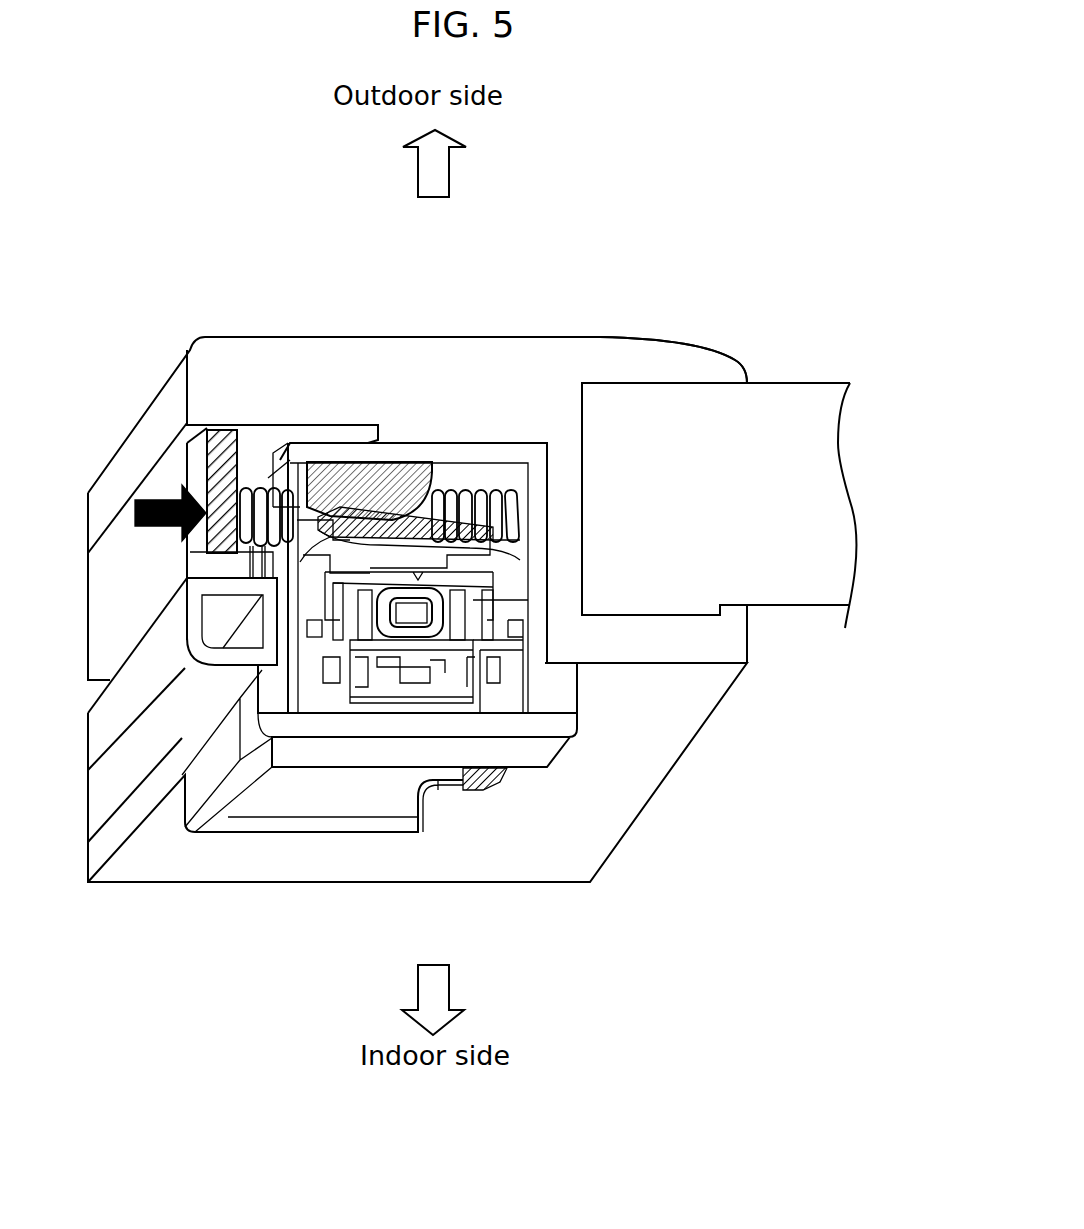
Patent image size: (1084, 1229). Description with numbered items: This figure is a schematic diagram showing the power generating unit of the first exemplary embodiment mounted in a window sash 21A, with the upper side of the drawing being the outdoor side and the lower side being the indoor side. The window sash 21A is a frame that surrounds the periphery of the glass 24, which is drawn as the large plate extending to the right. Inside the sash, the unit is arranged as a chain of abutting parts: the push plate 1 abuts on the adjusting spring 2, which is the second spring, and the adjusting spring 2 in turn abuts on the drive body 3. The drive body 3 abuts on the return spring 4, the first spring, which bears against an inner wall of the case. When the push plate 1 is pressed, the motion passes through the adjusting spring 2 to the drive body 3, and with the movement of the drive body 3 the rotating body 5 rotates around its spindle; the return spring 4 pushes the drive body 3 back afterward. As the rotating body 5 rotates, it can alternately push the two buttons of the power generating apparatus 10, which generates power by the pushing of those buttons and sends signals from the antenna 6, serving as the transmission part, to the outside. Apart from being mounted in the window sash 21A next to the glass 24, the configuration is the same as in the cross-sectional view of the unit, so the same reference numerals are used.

The push plate 1 is at (227, 463).
The adjusting spring 2 is at (263, 490).
The drive body 3 is at (383, 485).
The return spring 4 is at (487, 485).
The rotating body 5 is at (450, 490).
The antenna 6 is at (392, 695).
The power generating apparatus 10 is at (488, 692).
The window sash 21A is at (690, 365).
The glass 24 is at (805, 413).